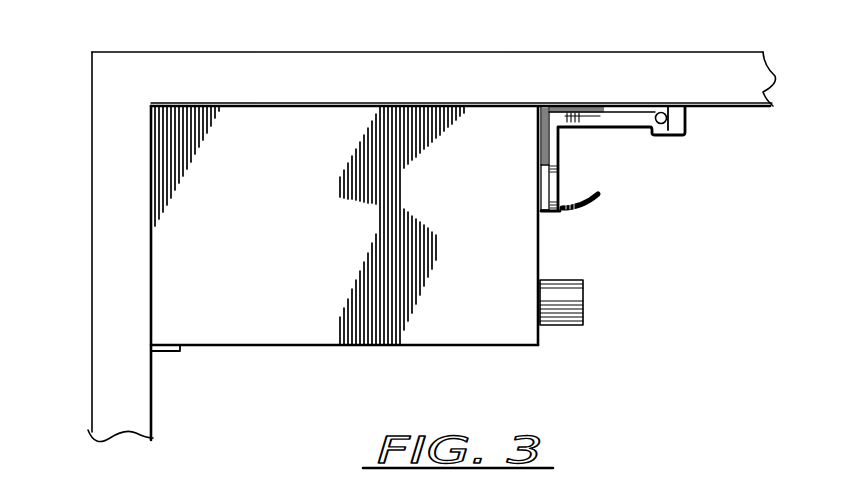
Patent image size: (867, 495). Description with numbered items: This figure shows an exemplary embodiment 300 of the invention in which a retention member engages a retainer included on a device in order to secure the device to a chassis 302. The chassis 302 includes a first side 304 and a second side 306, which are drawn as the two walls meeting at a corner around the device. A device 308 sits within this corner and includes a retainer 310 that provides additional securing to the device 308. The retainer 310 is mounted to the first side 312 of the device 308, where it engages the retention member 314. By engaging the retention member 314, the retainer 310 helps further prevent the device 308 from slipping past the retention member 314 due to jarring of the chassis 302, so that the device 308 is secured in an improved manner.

The exemplary embodiment 300 is at (608, 278).
The chassis 302 is at (278, 32).
The first side 304 is at (472, 52).
The second side 306 is at (100, 262).
The device 308 is at (315, 272).
The retainer 310 is at (577, 107).
The first side of device 312 is at (539, 242).
The retention member 314 is at (560, 152).